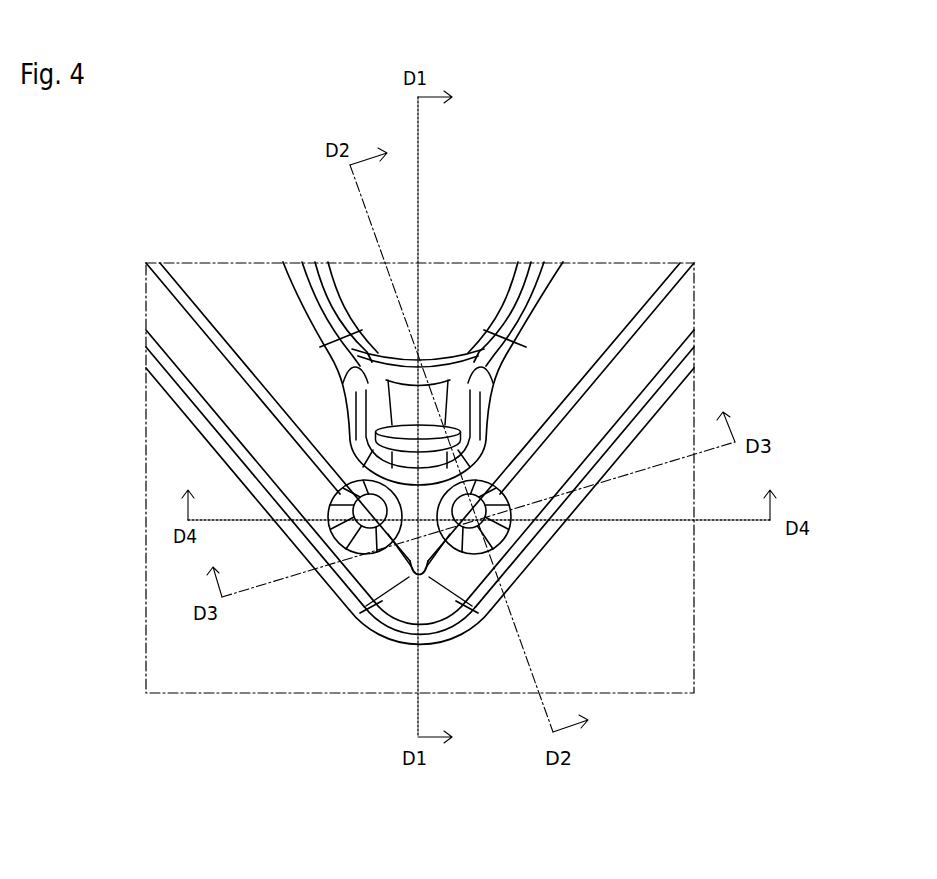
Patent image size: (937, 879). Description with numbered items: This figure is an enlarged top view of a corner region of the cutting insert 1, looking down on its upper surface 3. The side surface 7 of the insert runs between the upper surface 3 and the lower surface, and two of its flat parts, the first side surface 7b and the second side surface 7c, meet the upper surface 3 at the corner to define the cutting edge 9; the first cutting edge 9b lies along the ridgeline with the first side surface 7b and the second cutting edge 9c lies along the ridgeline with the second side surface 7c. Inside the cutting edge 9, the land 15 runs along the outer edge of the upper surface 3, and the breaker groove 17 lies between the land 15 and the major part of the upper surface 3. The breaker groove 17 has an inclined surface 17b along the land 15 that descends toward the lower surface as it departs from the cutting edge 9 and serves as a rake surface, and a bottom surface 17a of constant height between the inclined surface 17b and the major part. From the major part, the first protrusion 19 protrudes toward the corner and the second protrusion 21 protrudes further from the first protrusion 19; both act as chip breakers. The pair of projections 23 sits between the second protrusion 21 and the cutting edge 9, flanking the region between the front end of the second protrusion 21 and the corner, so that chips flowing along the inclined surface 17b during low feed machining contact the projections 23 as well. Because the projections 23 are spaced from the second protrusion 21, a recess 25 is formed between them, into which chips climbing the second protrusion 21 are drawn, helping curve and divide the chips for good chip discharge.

The cutting insert 1 is at (260, 120).
The upper surface 3 is at (455, 285).
The side surface 7 is at (388, 628).
The first side surface 7b is at (190, 423).
The second side surface 7c is at (515, 563).
The cutting edge 9 is at (440, 628).
The first cutting edge 9b is at (298, 550).
The second cutting edge 9c is at (520, 578).
The land 15 is at (687, 367).
The breaker groove 17 is at (756, 196).
The bottom surface 17a is at (618, 287).
The inclined surface 17b is at (668, 325).
The first protrusion 19 is at (398, 405).
The second protrusion 21 is at (353, 443).
The pair of projections 23 is at (345, 548).
The recess 25 is at (477, 477).